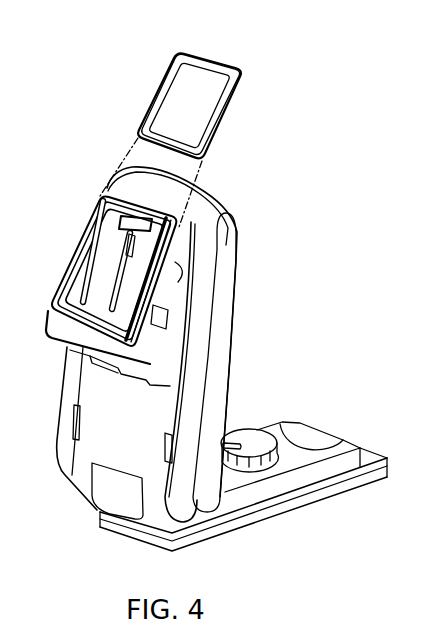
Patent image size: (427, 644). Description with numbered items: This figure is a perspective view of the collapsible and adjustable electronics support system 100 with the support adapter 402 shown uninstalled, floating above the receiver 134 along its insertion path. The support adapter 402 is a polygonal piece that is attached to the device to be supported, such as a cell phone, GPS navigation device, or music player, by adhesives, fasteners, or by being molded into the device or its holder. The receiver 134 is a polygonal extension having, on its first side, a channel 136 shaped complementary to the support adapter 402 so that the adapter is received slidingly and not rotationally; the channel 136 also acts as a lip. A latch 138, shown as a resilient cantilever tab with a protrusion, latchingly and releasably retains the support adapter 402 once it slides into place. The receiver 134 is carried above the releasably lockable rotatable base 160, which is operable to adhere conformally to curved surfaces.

The collapsible and adjustable electronics support system 100 is at (120, 53).
The support adapter 402 is at (185, 118).
The latch 138 is at (130, 217).
The channel 136 is at (88, 223).
The receiver 134 is at (44, 338).
The releasably lockable rotatable base 160 is at (302, 514).